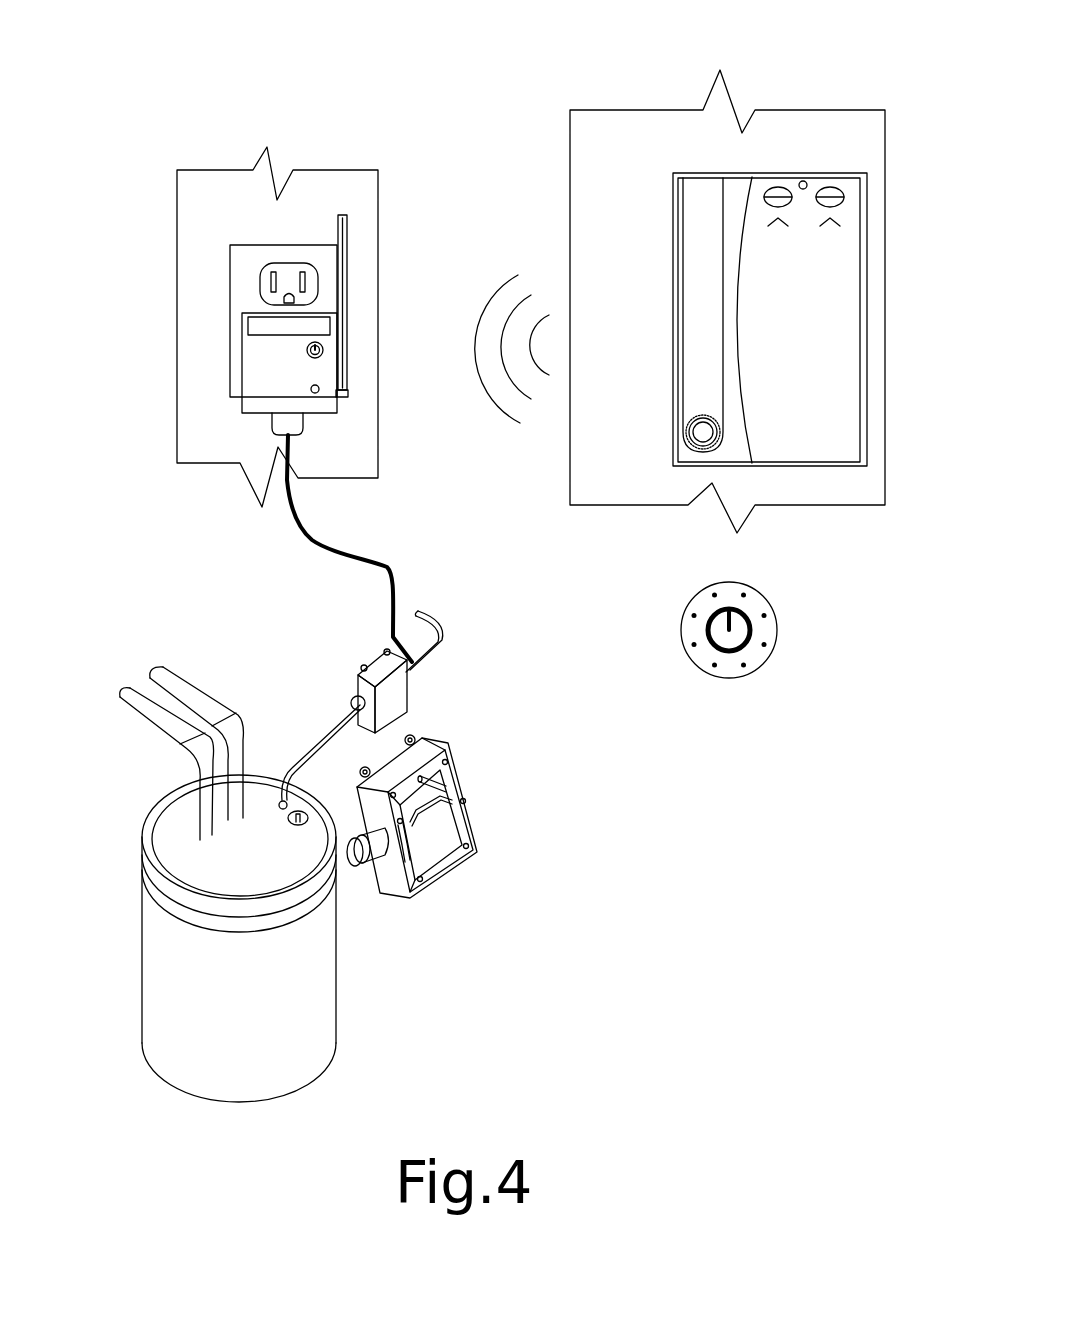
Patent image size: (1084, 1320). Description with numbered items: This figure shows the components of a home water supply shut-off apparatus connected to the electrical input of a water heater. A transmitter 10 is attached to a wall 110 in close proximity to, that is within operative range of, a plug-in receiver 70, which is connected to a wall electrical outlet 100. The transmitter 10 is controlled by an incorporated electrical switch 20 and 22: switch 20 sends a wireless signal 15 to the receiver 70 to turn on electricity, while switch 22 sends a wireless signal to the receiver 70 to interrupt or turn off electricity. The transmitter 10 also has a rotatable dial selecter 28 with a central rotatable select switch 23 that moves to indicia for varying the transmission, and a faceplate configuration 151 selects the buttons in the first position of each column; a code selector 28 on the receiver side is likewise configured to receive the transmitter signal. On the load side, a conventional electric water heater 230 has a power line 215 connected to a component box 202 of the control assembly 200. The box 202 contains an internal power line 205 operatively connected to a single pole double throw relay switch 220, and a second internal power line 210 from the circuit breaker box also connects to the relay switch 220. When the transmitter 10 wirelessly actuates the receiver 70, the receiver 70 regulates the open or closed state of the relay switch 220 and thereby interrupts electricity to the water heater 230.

The transmitter 10 is at (718, 150).
The wireless signal 15 is at (490, 398).
The electrical switch 20 is at (773, 187).
The electrical switch 22 is at (833, 187).
The central rotatable select switch 23 is at (728, 613).
The rotatable dial selecter 28 is at (320, 348).
The plug-in receiver 70 is at (265, 434).
The wall electrical outlet 100 is at (253, 245).
The wall 110 is at (313, 203).
The configuration 151 is at (818, 418).
The controller assembly 200 is at (436, 700).
The component box 202 is at (385, 667).
The internal power line 205 is at (333, 552).
The second internal power line 210 is at (435, 625).
The power line 215 is at (325, 727).
The SPDT relay switch 220 is at (437, 858).
The electric water heater 230 is at (332, 963).